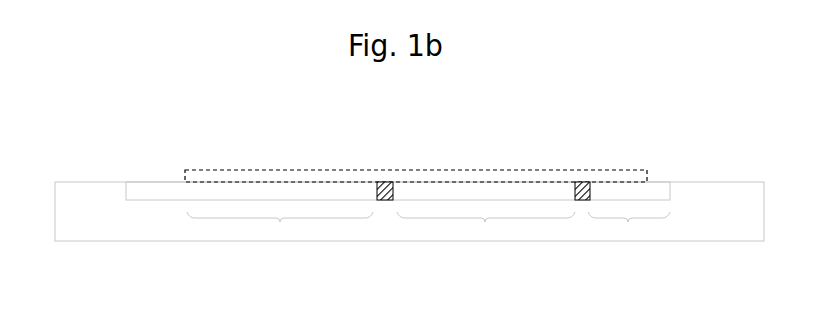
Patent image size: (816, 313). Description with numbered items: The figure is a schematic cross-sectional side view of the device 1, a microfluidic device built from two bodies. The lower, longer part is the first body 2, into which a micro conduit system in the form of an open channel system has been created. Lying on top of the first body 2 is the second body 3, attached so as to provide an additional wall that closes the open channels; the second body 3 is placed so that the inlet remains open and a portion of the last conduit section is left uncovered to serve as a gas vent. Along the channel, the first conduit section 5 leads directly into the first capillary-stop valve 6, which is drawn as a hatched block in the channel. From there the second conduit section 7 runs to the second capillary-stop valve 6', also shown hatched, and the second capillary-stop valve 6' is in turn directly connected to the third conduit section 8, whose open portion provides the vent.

The device 1 is at (398, 195).
The first body 2 is at (378, 206).
The second body 3 is at (267, 170).
The first conduit section 5 is at (280, 234).
The first capillary-stop valve 6 is at (363, 164).
The second capillary-stop valve 6' is at (562, 164).
The second conduit section 7 is at (486, 234).
The third conduit section 8 is at (629, 234).